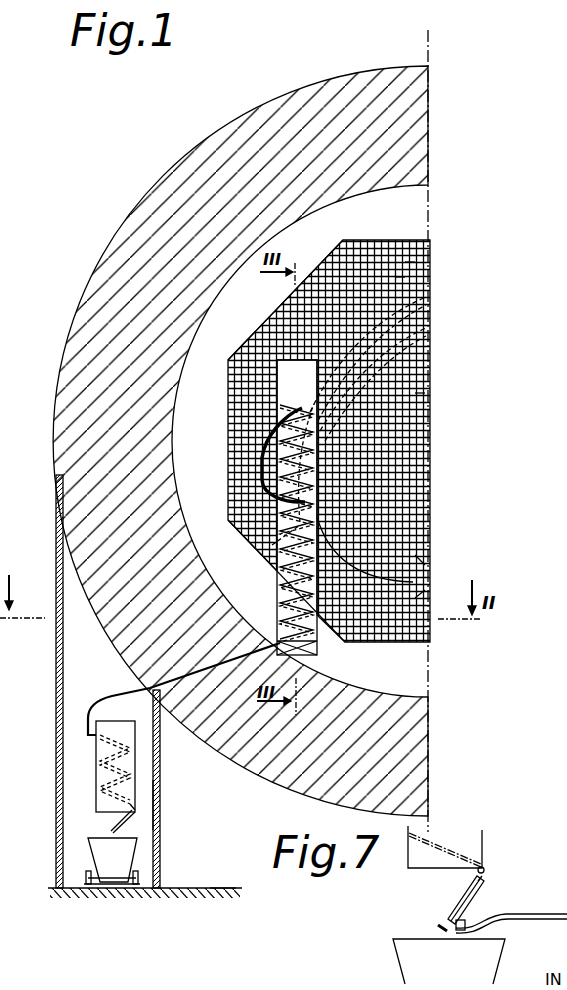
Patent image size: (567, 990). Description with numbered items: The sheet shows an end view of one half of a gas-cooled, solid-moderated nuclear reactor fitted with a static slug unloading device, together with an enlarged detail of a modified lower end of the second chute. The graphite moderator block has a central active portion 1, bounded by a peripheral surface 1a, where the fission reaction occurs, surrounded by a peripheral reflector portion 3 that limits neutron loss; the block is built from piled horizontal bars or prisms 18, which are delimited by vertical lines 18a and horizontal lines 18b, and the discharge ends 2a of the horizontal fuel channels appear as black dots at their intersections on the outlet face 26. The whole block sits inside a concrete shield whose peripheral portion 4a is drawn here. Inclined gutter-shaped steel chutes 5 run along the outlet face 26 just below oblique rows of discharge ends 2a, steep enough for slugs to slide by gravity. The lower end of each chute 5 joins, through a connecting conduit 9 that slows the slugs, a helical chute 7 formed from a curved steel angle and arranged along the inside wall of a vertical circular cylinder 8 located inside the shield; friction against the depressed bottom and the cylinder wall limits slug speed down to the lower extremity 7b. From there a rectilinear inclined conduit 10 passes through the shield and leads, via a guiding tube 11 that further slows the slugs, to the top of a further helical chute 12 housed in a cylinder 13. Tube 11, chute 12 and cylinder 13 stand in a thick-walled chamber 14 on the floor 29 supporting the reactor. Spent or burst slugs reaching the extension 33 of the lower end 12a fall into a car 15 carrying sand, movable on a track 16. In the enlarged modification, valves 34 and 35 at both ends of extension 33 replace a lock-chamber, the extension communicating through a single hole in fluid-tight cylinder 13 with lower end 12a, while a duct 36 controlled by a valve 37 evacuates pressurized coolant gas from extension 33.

In FIG. 1, the central active portion 1 is at (396, 458).
In FIG. 1, the peripheral surface 1a is at (347, 553).
In FIG. 1, the discharge ends 2a is at (382, 318).
In FIG. 1, the peripheral reflector portion 3 is at (340, 275).
In FIG. 1, the peripheral portion of shield 4a is at (158, 240).
In FIG. 1, the inclined parallel chutes 5 is at (380, 342).
In FIG. 1, the helical chute 7 is at (272, 545).
In FIG. 1, the lower extremity of helical chute 7b is at (318, 655).
In FIG. 1, the circular cylinder 8 is at (277, 594).
In FIG. 1, the connecting conduit 9 is at (262, 456).
In FIG. 1, the rectilinear inclined conduit 10 is at (243, 662).
In FIG. 1, the guiding tube 11 is at (86, 714).
In FIG. 1, the further helical chute 12 is at (115, 758).
In FIG. 7, the further helical chute 12 is at (444, 848).
In FIG. 1, the lower end of helical chute 12a is at (132, 808).
In FIG. 7, the lower end of helical chute 12a is at (484, 867).
In FIG. 1, the cylinder 13 is at (96, 768).
In FIG. 7, the cylinder 13 is at (483, 842).
In FIG. 1, the chamber 14 is at (160, 808).
In FIG. 1, the car 15 is at (120, 852).
In FIG. 7, the car 15 is at (478, 962).
In FIG. 1, the track 16 is at (140, 884).
In FIG. 1, the horizontal bars or prisms 18 is at (420, 560).
In FIG. 1, the vertical lines 18a is at (400, 277).
In FIG. 1, the horizontal lines 18b is at (410, 265).
In FIG. 1, the outlet face 26 is at (420, 393).
In FIG. 1, the floor 29 is at (212, 887).
In FIG. 1, the extension 33 is at (128, 822).
In FIG. 7, the extension 33 is at (468, 895).
In FIG. 7, the valve 34 is at (484, 885).
In FIG. 7, the valve 35 is at (437, 926).
In FIG. 7, the duct 36 is at (527, 915).
In FIG. 7, the valve 37 is at (464, 922).